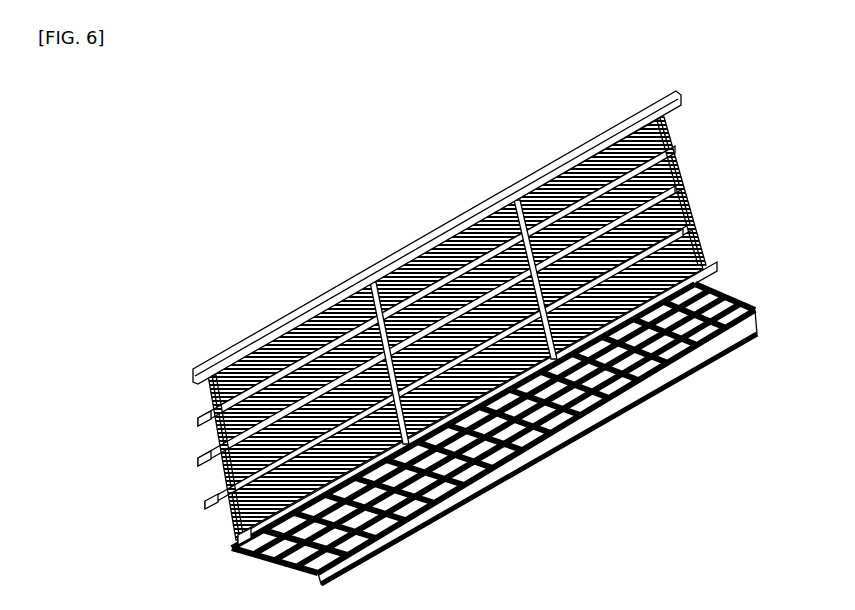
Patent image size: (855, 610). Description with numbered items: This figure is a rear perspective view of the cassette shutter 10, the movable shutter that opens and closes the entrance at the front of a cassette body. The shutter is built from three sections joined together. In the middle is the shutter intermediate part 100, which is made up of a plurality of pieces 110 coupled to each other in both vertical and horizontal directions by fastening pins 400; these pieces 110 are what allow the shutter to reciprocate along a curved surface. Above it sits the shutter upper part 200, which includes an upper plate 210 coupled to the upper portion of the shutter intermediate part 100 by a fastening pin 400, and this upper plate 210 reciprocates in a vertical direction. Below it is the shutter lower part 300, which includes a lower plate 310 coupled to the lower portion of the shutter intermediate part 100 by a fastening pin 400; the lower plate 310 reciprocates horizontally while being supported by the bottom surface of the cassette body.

The cassette shutter 10 is at (254, 243).
The shutter intermediate part 100 is at (478, 330).
The pieces 110 is at (378, 264).
The shutter upper part 200 is at (470, 237).
The upper plate 210 is at (487, 217).
The shutter lower part 300 is at (510, 412).
The lower plate 310 is at (572, 450).
The fastening pins 400 is at (238, 542).